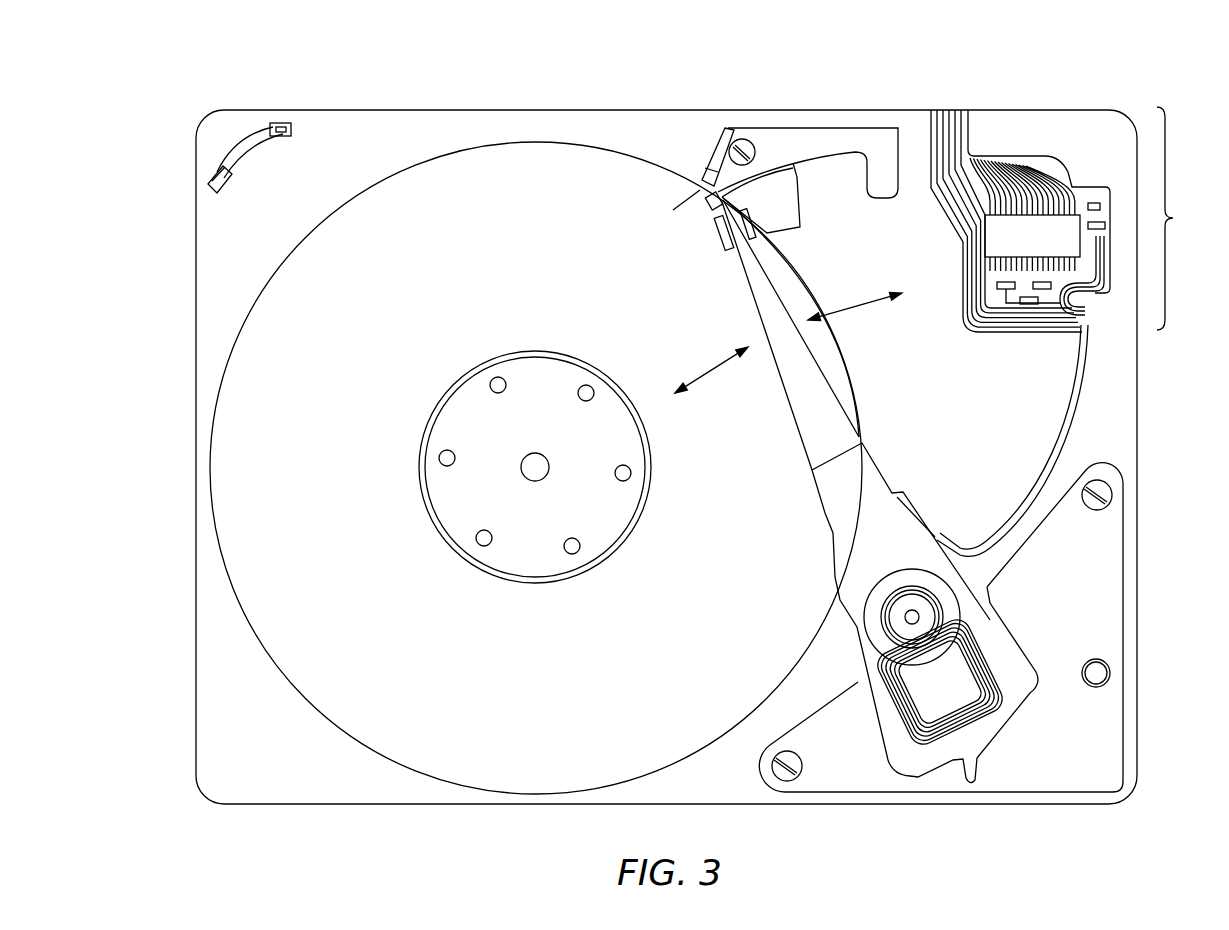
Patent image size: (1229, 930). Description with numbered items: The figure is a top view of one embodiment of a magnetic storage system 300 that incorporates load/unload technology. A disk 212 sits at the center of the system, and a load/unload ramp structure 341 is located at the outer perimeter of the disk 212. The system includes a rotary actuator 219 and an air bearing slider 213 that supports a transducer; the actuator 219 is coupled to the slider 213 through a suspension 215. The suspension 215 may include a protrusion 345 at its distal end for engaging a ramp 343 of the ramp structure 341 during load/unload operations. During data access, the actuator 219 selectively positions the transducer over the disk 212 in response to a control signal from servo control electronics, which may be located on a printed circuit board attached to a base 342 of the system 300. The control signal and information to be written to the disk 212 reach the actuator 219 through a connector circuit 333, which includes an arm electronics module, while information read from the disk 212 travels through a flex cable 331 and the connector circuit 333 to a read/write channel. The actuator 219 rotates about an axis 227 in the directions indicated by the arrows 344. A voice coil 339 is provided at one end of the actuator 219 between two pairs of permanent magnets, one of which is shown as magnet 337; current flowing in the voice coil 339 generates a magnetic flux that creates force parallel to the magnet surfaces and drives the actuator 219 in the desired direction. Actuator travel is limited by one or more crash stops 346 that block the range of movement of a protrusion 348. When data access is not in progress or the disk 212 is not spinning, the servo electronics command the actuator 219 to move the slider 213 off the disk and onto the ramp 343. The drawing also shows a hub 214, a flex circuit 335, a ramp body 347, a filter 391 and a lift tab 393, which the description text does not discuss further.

The magnetic storage system 300 is at (693, 74).
The disk 212 is at (655, 725).
The air bearing slider 213 is at (717, 233).
The spindle hub 214 is at (615, 517).
The suspension 215 is at (792, 403).
The rotary actuator 219 is at (825, 500).
The axis 227 is at (910, 610).
The flex cable 331 is at (1058, 434).
The connector circuit 333 is at (1189, 218).
The flex circuit 335 is at (945, 108).
The permanent magnet 337 is at (1088, 766).
The voice coil 339 is at (935, 725).
The load/unload ramp structure 341 is at (819, 93).
The base 342 is at (293, 778).
The ramp 343 is at (708, 191).
The arrows 344 is at (852, 303).
The protrusion 345 is at (700, 184).
The crash stop 346 is at (1094, 657).
The ramp 347 is at (793, 215).
The protrusion 348 is at (968, 781).
The filter 391 is at (248, 152).
The lift tab 393 is at (712, 158).